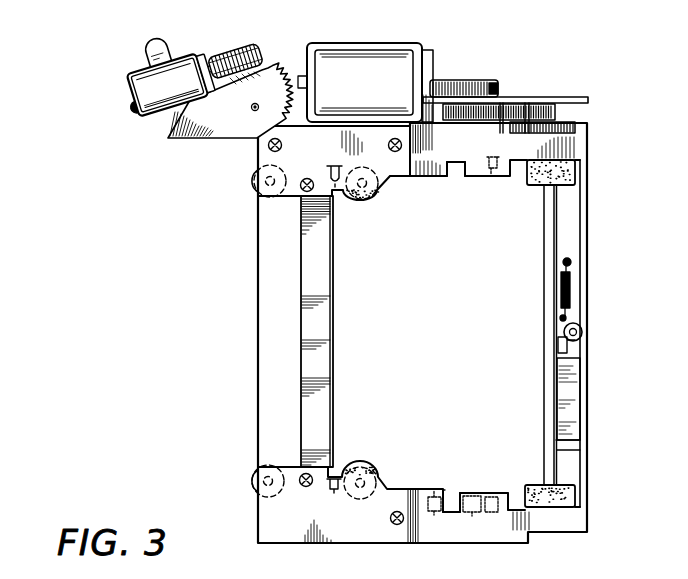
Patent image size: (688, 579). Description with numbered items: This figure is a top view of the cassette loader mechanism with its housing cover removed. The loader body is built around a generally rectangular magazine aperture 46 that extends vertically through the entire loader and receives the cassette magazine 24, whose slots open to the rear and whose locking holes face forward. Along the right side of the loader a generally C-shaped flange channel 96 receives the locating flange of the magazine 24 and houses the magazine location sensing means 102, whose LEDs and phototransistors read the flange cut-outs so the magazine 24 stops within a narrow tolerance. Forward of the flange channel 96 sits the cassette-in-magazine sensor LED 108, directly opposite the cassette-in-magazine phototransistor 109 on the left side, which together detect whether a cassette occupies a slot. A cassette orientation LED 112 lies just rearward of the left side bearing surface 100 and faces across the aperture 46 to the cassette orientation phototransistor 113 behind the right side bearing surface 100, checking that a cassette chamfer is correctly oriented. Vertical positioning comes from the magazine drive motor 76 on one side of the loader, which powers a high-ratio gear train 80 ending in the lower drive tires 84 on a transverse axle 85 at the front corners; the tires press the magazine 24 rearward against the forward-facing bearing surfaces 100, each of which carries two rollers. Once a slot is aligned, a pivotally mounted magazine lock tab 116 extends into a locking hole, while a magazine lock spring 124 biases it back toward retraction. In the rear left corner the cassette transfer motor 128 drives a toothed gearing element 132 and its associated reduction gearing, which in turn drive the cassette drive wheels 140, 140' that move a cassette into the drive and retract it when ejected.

The cassette magazine 24 is at (572, 525).
The magazine aperture 46 is at (432, 327).
The magazine drive motor 76 is at (382, 72).
The gear train 80 is at (470, 70).
The lower drive tires 84 is at (575, 170).
The axle 85 is at (557, 213).
The flange channel 96 is at (460, 176).
The bearing surface 100 is at (451, 168).
The magazine location sensing means 102 is at (433, 497).
The cassette-in-magazine sensor LED 108 is at (492, 178).
The cassette-in-magazine phototransistor 109 is at (496, 492).
The cassette orientation LED 112 is at (337, 192).
The cassette orientation phototransistor 113 is at (332, 478).
The magazine lock tab 116 is at (537, 336).
The magazine lock spring 124 is at (568, 293).
The cassette transfer motor 128 is at (123, 80).
The gear sector 132 is at (266, 12).
The cassette drive wheel 140 is at (303, 203).
The cassette drive wheel 140' is at (302, 440).